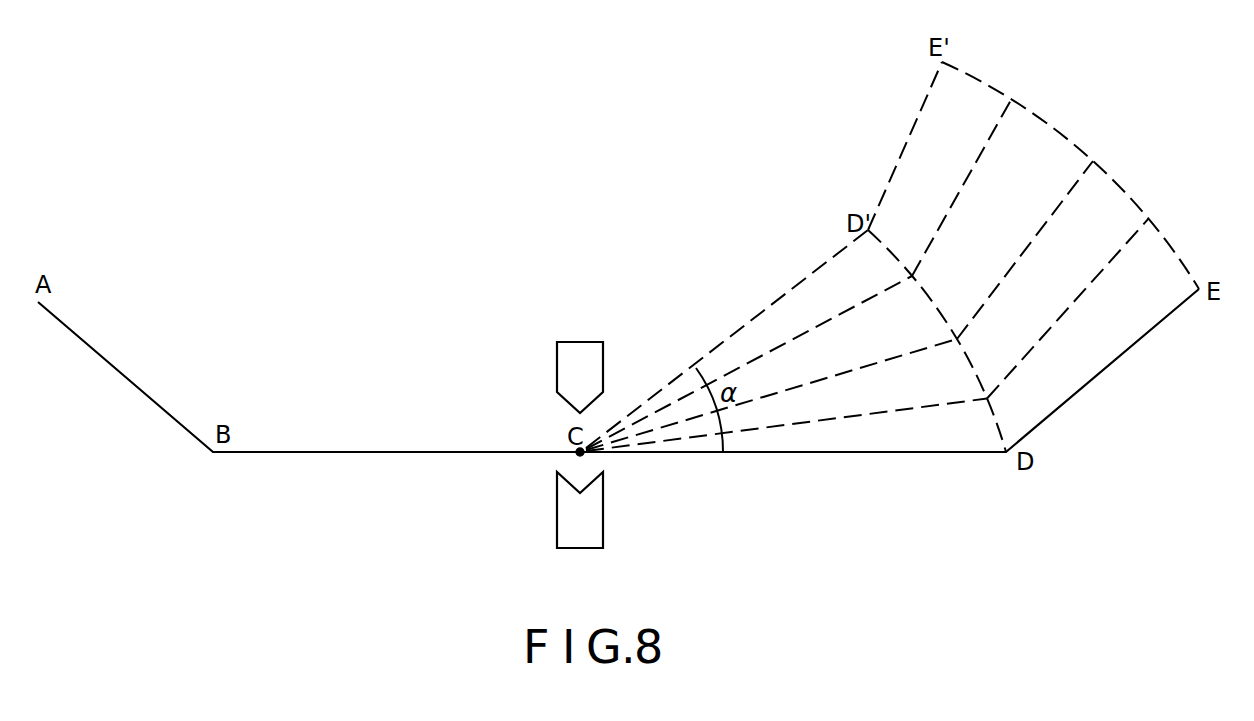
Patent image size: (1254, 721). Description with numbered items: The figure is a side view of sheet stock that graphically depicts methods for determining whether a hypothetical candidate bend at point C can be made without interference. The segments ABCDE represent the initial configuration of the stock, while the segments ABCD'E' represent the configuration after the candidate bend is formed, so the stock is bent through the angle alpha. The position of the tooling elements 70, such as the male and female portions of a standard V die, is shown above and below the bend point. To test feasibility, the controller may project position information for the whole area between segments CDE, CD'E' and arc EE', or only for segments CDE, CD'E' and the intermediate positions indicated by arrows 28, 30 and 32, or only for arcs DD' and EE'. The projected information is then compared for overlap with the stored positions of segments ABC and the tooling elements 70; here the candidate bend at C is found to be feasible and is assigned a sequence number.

The tooling elements 70 is at (603, 357).
The intermediate position 28 is at (1148, 219).
The intermediate position 30 is at (1093, 161).
The intermediate position 32 is at (1011, 100).